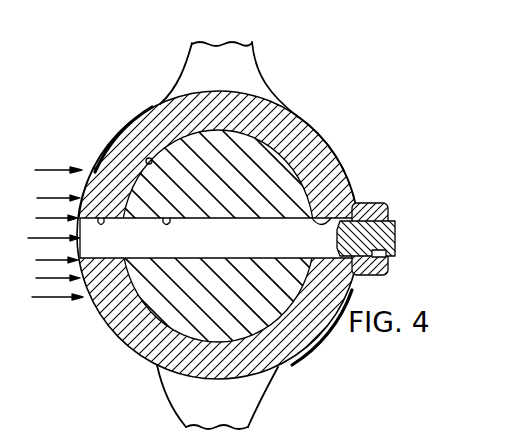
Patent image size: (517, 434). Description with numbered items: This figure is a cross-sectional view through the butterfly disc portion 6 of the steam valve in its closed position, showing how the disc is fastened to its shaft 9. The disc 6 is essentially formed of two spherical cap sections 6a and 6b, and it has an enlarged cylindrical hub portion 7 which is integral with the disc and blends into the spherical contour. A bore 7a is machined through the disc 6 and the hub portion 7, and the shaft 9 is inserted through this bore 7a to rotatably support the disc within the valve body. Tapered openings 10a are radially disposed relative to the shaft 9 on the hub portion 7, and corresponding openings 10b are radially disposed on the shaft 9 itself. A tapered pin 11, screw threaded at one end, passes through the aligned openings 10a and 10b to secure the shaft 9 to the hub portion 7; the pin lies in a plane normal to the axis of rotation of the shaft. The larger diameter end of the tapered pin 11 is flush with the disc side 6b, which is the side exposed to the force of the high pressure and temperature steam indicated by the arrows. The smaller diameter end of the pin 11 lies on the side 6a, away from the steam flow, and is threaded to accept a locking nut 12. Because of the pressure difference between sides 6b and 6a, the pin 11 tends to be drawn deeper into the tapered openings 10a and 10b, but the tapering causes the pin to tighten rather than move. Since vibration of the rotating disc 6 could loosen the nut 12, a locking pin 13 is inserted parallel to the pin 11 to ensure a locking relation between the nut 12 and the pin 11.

The butterfly disc portion 6 is at (300, 128).
The spherical cap section 6a is at (321, 128).
The spherical cap section 6b is at (140, 108).
The hub portion 7 is at (338, 181).
The bore 7a is at (145, 160).
The shaft 9 is at (226, 130).
The tapered openings 10a is at (102, 216).
The openings 10b is at (166, 216).
The tapered pin 11 is at (239, 226).
The locking nut 12 is at (371, 203).
The locking pin 13 is at (377, 245).